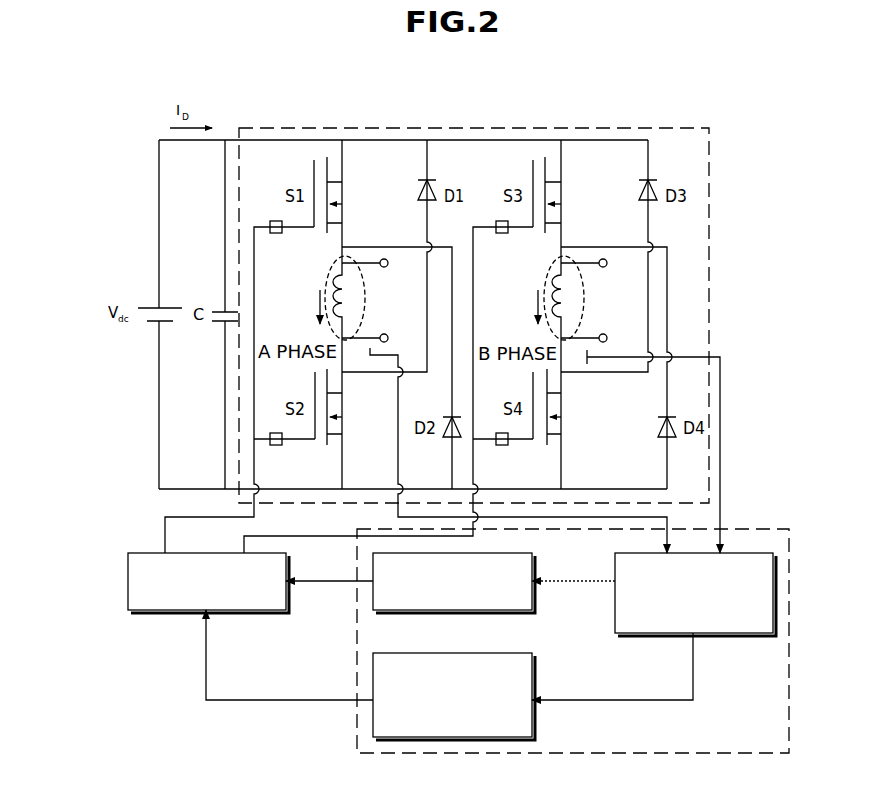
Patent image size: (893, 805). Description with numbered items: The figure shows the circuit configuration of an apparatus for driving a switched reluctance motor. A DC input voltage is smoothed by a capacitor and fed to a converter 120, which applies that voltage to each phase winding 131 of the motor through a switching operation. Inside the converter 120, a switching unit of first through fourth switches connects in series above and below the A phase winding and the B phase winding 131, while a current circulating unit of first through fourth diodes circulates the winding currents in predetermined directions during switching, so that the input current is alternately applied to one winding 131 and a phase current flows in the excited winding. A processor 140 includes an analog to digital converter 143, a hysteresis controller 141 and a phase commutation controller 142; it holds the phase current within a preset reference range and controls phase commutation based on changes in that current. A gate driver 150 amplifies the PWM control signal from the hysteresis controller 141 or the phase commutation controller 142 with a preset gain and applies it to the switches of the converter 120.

The converter 120 is at (660, 128).
The phase winding (stator coil) 131 is at (362, 273).
The processor 140 is at (789, 628).
The hysteresis controller 141 is at (373, 597).
The phase commutation controller 142 is at (373, 718).
The analog to digital converter 143 is at (752, 553).
The gate driver 150 is at (128, 577).